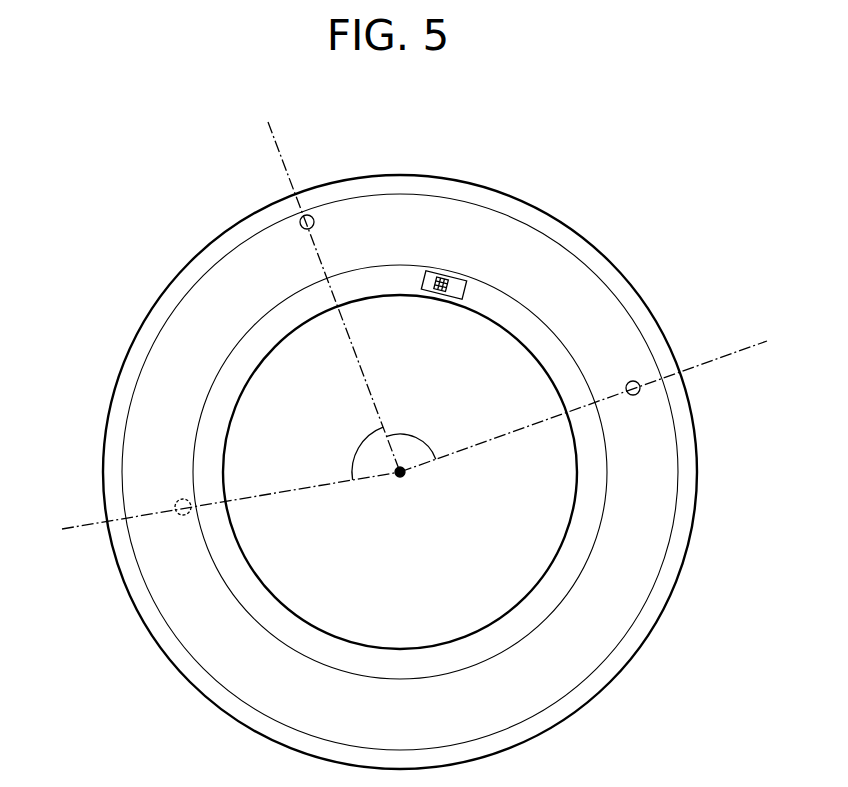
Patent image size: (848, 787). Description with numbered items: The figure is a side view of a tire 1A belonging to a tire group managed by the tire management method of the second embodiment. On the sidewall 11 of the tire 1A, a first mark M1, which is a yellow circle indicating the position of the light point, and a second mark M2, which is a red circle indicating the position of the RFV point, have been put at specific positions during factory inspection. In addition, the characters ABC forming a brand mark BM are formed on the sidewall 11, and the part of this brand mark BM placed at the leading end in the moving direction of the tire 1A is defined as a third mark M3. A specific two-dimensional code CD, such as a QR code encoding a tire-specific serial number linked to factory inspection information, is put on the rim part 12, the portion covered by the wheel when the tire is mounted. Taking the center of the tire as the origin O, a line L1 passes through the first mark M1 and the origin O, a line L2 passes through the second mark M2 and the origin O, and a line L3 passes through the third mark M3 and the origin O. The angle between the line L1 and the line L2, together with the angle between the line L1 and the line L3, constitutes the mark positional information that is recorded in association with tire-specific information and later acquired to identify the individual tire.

The tire 1A is at (63, 201).
The sidewall 11 is at (530, 256).
The rim part 12 is at (395, 658).
The brand mark BM is at (135, 388).
The two-dimensional code CD is at (447, 297).
The origin O is at (400, 478).
The line L1 is at (287, 177).
The line L2 is at (737, 350).
The line L3 is at (73, 533).
The first mark M1 is at (310, 214).
The second mark M2 is at (638, 381).
The third mark M3 is at (188, 500).